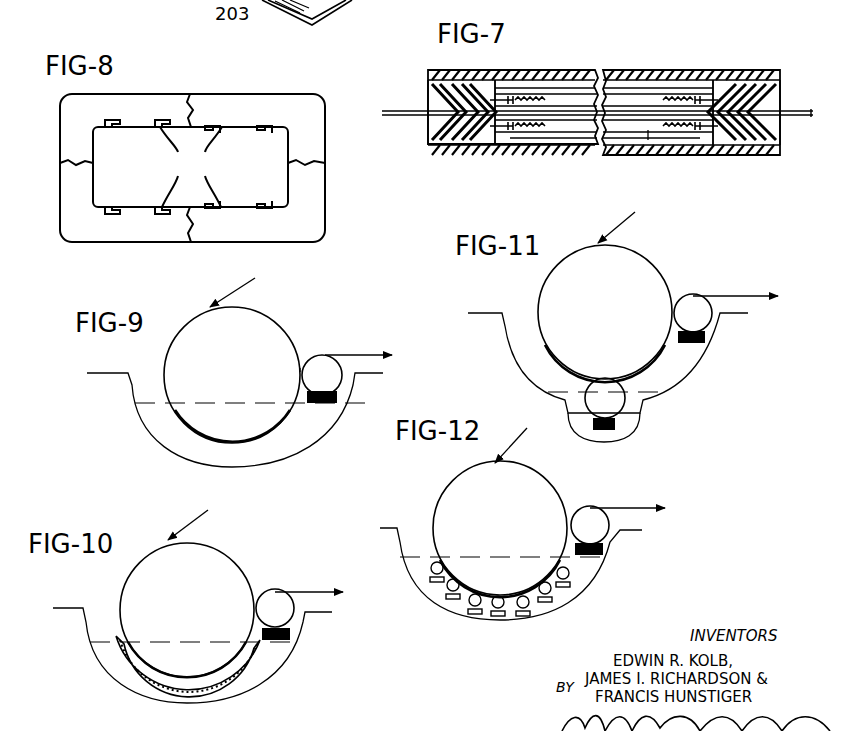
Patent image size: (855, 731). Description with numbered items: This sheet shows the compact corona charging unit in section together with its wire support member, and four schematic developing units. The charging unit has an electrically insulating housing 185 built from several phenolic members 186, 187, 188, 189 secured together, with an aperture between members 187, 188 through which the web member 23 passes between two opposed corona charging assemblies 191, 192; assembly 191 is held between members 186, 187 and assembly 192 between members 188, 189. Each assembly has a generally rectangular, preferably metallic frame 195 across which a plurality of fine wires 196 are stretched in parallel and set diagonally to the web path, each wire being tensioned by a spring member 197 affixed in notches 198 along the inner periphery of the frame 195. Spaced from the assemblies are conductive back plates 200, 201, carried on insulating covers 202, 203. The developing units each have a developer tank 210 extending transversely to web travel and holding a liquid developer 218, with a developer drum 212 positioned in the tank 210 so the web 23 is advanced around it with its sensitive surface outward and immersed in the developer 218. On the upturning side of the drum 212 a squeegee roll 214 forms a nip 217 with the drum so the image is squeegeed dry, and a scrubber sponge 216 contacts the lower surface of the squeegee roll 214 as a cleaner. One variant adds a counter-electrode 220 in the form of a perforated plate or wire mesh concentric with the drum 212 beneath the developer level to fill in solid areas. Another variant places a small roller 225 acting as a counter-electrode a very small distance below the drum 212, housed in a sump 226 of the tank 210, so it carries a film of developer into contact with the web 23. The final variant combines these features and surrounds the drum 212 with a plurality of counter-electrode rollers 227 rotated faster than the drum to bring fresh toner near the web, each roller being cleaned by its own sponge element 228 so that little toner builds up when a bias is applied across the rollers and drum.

In FIG. 7, the web member 23 is at (387, 110).
In FIG. 9, the web member 23 is at (212, 304).
In FIG. 10, the web member 23 is at (205, 522).
In FIG. 11, the web member 23 is at (602, 230).
In FIG. 12, the web member 23 is at (478, 458).
In FIG. 7, the electrically insulating housing 185 is at (437, 60).
In FIG. 7, the housing member 186 is at (428, 84).
In FIG. 7, the housing member 187 is at (780, 107).
In FIG. 7, the housing member 188 is at (780, 124).
In FIG. 7, the housing member 189 is at (430, 135).
In FIG. 7, the corona charging assembly 191 is at (645, 92).
In FIG. 7, the corona charging assembly 192 is at (650, 138).
In FIG. 8, the rectangular frame 195 is at (262, 95).
In FIG. 7, the rectangular frame 195 is at (702, 102).
In FIG. 7, the fine wires 196 is at (590, 95).
In FIG. 7, the spring member 197 is at (682, 96).
In FIG. 8, the notches 198 is at (191, 167).
In FIG. 7, the conductive back plate 200 is at (551, 80).
In FIG. 7, the conductive back plate 201 is at (540, 152).
In FIG. 7, the insulating cover 202 is at (622, 70).
In FIG. 7, the insulating cover 203 is at (605, 152).
In FIG. 9, the developer tank 210 is at (282, 458).
In FIG. 10, the developer tank 210 is at (192, 655).
In FIG. 11, the developer tank 210 is at (666, 392).
In FIG. 12, the developer tank 210 is at (590, 583).
In FIG. 9, the developer drum 212 is at (268, 330).
In FIG. 10, the developer drum 212 is at (224, 568).
In FIG. 11, the developer drum 212 is at (643, 270).
In FIG. 12, the developer drum 212 is at (445, 498).
In FIG. 9, the squeegee roll 214 is at (325, 368).
In FIG. 10, the squeegee roll 214 is at (275, 600).
In FIG. 11, the squeegee roll 214 is at (696, 305).
In FIG. 12, the squeegee roll 214 is at (600, 532).
In FIG. 9, the scrubber sponge 216 is at (320, 392).
In FIG. 10, the scrubber sponge 216 is at (292, 634).
In FIG. 11, the scrubber sponge 216 is at (692, 344).
In FIG. 12, the scrubber sponge 216 is at (605, 556).
In FIG. 9, the nip 217 is at (302, 363).
In FIG. 9, the liquid developer 218 is at (233, 462).
In FIG. 10, the liquid developer 218 is at (268, 660).
In FIG. 11, the liquid developer 218 is at (680, 364).
In FIG. 12, the liquid developer 218 is at (435, 590).
In FIG. 10, the counter-electrode 220 is at (225, 680).
In FIG. 11, the small roller 225 is at (612, 410).
In FIG. 11, the sump 226 is at (598, 443).
In FIG. 12, the counter-electrode rollers 227 is at (562, 568).
In FIG. 12, the sponge element 228 is at (523, 614).